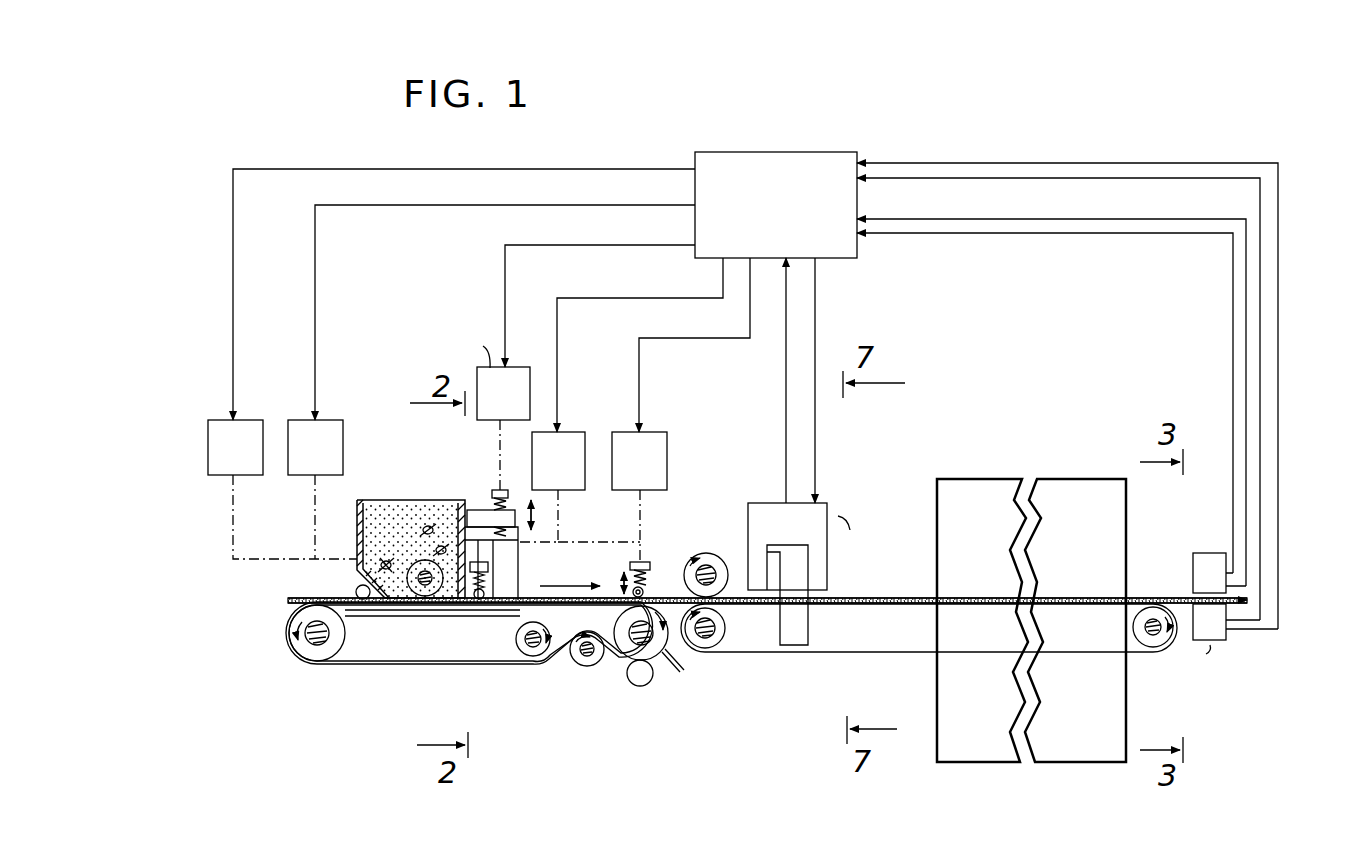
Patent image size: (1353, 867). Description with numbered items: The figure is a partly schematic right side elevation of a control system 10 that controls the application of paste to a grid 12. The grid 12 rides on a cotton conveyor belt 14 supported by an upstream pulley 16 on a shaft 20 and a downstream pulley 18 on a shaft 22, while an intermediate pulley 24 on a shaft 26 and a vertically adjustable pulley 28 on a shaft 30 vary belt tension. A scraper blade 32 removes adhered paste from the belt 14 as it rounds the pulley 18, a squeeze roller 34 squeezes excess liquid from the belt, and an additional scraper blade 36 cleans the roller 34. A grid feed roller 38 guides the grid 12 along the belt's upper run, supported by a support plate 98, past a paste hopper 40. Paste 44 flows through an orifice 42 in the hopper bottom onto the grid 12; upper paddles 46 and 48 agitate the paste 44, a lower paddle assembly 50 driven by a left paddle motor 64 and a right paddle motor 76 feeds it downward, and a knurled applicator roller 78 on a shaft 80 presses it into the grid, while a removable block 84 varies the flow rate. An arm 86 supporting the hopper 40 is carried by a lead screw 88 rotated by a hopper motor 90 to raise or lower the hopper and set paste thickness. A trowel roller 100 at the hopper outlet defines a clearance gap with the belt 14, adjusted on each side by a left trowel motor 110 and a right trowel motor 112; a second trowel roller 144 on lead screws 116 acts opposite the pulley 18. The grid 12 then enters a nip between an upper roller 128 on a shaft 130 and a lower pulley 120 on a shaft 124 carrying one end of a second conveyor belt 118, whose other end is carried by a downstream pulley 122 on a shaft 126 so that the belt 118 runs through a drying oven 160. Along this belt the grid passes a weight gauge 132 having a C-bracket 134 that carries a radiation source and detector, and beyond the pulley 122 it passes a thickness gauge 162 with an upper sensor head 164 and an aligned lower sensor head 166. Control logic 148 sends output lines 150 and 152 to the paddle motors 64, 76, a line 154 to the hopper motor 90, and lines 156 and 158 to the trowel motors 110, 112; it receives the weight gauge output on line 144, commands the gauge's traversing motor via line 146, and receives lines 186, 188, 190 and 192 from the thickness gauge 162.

The control system 10 is at (560, 708).
The grid 12 is at (300, 599).
The conveyor belt 14 is at (418, 668).
The upstream pulley 16 is at (300, 659).
The downstream pulley 18 is at (630, 660).
The shaft 20 is at (320, 645).
The shaft 22 is at (665, 646).
The intermediate pulley 24 is at (520, 660).
The shaft 26 is at (532, 652).
The vertically adjustable pulley 28 is at (580, 662).
The shaft 30 is at (588, 644).
The scraper blade 32 is at (682, 680).
The squeeze roller 34 is at (652, 682).
The additional scraper blade 36 is at (631, 688).
The grid feed roller 38 is at (357, 590).
The paste hopper 40 is at (400, 500).
The orifice 42 is at (398, 606).
The paste 44 is at (380, 510).
The upper paddle 46 is at (435, 520).
The upper paddle 48 is at (430, 552).
The lower paddle assembly 50 is at (387, 562).
The left paddle motor 64 is at (215, 418).
The right paddle motor 76 is at (297, 418).
The applicator roller 78 is at (436, 604).
The shaft 80 is at (422, 598).
The removable block 84 is at (478, 598).
The arm 86 is at (480, 510).
The lead screw 88 is at (512, 490).
The hopper motor 90 is at (523, 368).
The support plate 98 is at (368, 615).
The trowel roller 100 is at (490, 600).
The left trowel motor 110 is at (577, 432).
The right trowel motor 112 is at (668, 432).
The lead screws 116 is at (640, 562).
The conveyor belt 118 is at (776, 655).
The lower pulley 120 is at (722, 635).
The downstream pulley 122 is at (1138, 630).
The shaft 124 is at (715, 630).
The shaft 126 is at (1152, 640).
The upper roller 128 is at (706, 553).
The shaft 130 is at (712, 566).
The weight gauge 132 is at (820, 507).
The C-bracket 134 is at (809, 630).
The second trowel roller 144 is at (786, 389).
The line 146 is at (816, 458).
The control logic 148 is at (787, 160).
The output line 150 is at (322, 170).
The output line 152 is at (318, 259).
The line 154 is at (505, 294).
The line 156 is at (640, 302).
The line 158 is at (642, 402).
The drying oven 160 is at (965, 482).
The thickness gauge 162 is at (1208, 563).
The upper sensor head 164 is at (1195, 572).
The lower sensor head 166 is at (1200, 632).
The line 186 is at (1043, 217).
The line 188 is at (1150, 231).
The line 190 is at (962, 180).
The line 192 is at (1000, 163).